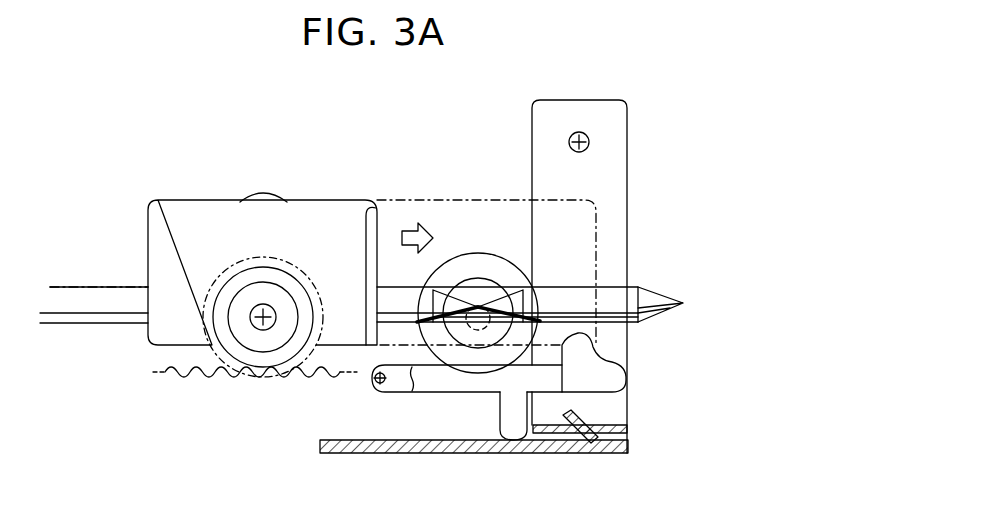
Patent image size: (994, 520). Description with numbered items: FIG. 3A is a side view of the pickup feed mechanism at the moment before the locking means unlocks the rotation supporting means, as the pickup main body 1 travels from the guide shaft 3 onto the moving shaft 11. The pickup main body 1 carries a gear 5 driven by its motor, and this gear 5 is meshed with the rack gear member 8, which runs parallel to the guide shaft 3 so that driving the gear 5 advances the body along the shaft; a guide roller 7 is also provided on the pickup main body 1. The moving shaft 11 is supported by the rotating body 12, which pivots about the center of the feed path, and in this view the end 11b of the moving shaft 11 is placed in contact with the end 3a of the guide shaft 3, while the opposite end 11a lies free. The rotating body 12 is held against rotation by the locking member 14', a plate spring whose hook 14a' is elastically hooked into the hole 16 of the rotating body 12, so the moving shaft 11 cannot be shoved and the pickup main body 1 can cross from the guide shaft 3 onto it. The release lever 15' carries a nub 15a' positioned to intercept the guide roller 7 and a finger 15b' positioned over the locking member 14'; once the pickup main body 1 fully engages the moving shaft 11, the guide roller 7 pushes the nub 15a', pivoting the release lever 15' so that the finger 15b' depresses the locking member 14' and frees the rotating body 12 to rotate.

The pickup main body 1 is at (188, 210).
The guide shaft 3 is at (82, 325).
The end of guide shaft 3a is at (478, 307).
The gear 5 is at (213, 287).
The guide roller 7 is at (266, 305).
The rack gear member 8 is at (195, 377).
The moving shaft 11 is at (625, 290).
The end of moving shaft 11a is at (683, 303).
The end of moving shaft 11b is at (478, 307).
The rotating body 12 is at (627, 138).
The locking member 14' is at (474, 469).
The hook 14a' is at (596, 459).
The release lever 15' is at (465, 440).
The nub 15a' is at (629, 362).
The finger 15b' is at (494, 448).
The hole 16 is at (597, 427).